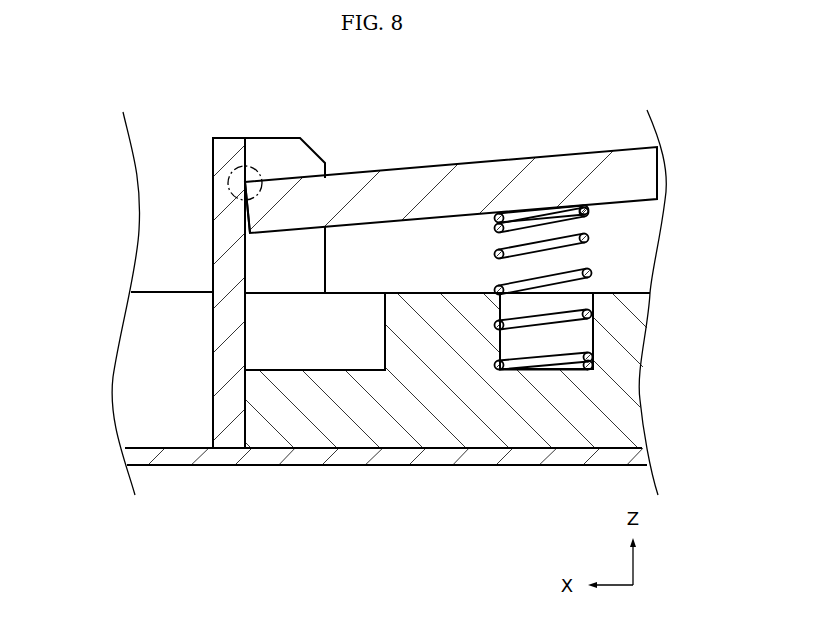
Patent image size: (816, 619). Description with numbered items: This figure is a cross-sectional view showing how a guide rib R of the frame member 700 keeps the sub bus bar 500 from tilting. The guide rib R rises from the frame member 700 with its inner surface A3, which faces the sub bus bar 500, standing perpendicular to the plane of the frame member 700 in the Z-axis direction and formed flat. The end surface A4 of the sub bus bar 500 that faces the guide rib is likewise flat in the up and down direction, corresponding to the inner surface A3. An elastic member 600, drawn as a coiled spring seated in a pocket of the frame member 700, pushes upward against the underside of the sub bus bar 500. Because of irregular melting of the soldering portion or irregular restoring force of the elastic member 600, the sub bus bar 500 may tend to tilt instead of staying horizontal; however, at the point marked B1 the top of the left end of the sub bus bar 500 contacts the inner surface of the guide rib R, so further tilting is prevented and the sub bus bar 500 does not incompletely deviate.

The guide rib R is at (226, 150).
The inner surface of the guide rib A3 is at (254, 149).
The contact point of the sub bus bar with the guide rib B1 is at (228, 185).
The end surface of the sub bus bar A4 is at (240, 222).
The sub bus bar 500 is at (466, 163).
The elastic member 600 is at (543, 360).
The frame member 700 is at (400, 467).